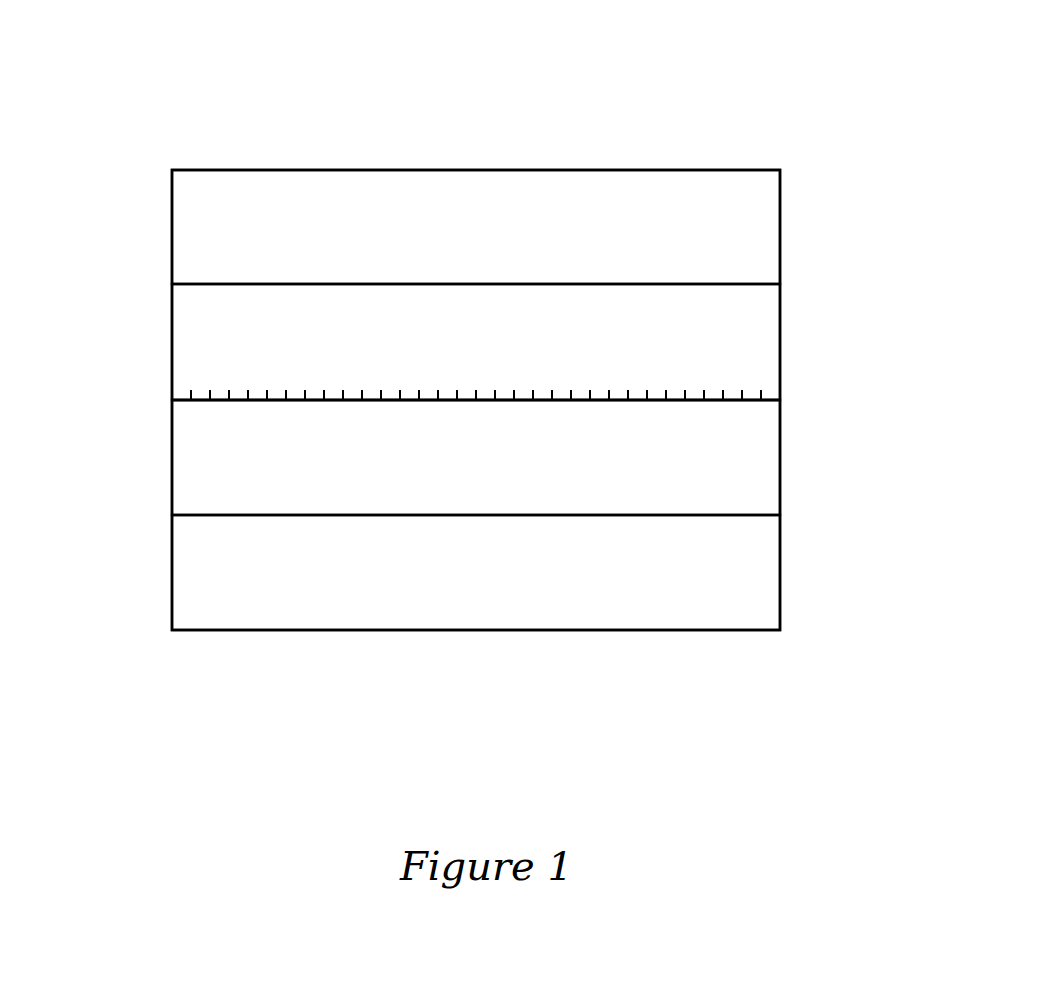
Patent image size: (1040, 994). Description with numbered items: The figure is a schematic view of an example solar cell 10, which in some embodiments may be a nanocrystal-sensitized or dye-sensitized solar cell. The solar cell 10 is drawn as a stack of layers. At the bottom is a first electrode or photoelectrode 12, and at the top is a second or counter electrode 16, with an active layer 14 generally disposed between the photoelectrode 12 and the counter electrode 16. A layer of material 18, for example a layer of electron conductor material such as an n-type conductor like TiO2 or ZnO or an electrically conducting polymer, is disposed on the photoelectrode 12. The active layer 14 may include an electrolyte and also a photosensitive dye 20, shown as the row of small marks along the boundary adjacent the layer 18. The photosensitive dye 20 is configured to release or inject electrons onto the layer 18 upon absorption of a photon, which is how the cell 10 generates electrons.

The solar cell 10 is at (920, 110).
The photoelectrode 12 is at (762, 578).
The active layer 14 is at (762, 349).
The counter electrode 16 is at (762, 234).
The layer of electron conductor material 18 is at (762, 464).
The photosensitive dye 20 is at (760, 397).